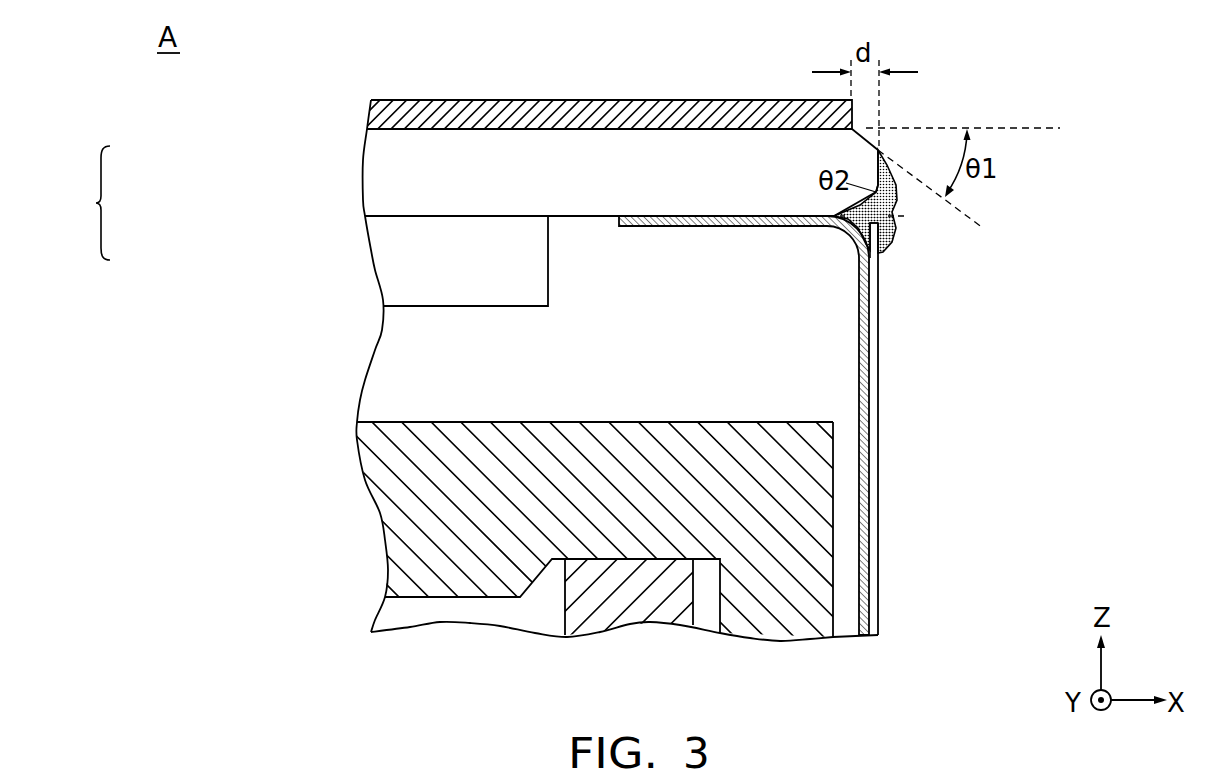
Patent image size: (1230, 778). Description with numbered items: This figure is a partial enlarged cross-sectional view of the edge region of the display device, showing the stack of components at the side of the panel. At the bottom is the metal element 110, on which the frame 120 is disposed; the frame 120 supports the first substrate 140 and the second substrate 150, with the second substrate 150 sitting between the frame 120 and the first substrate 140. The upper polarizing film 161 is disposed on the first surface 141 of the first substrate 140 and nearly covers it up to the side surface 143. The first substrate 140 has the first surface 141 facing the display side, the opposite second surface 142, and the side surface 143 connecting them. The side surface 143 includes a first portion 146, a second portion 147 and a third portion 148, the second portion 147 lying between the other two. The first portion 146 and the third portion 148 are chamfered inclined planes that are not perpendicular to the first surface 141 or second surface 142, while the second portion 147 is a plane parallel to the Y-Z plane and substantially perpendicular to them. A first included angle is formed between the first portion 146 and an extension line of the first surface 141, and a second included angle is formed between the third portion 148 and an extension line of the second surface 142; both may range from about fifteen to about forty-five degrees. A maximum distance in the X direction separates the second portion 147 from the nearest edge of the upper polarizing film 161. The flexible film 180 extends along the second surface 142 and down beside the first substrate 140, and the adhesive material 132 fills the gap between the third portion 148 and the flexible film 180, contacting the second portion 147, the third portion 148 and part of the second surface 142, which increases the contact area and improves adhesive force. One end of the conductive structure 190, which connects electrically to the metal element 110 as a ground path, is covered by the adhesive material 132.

The metal element 110 is at (628, 617).
The frame 120 is at (400, 513).
The adhesive material 132 is at (895, 228).
The first substrate 140 is at (380, 167).
The first surface 141 is at (560, 128).
The second surface 142 is at (590, 217).
The side surface 143 is at (106, 203).
The first portion 146 is at (866, 128).
The second portion 147 is at (893, 183).
The third portion 148 is at (880, 257).
The second substrate 150 is at (400, 260).
The upper polarizing film 161 is at (383, 115).
The flexible film 180 is at (863, 369).
The conductive structure 190 is at (875, 418).